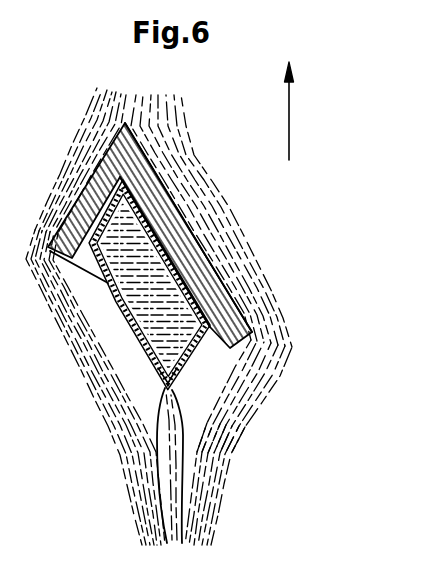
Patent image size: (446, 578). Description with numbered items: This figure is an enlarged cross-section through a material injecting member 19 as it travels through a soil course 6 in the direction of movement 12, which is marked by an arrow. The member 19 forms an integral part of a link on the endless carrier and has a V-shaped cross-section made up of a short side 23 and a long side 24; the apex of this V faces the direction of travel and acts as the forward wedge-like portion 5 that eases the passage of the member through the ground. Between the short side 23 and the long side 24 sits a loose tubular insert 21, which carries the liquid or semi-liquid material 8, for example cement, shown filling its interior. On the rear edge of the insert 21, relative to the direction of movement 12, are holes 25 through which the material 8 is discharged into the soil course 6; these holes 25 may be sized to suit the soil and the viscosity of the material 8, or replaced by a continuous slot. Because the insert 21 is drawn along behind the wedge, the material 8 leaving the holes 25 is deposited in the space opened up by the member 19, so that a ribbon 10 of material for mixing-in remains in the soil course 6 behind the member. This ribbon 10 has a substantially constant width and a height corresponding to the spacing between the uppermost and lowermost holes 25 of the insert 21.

The forward wedge-like portion 5 is at (128, 122).
The soil course 6 is at (223, 460).
The material 8 is at (150, 252).
The ribbon 10 is at (180, 513).
The direction of movement 12 is at (289, 108).
The material injecting member 19 is at (157, 203).
The tubular insert 21 is at (110, 292).
The short side 23 is at (80, 196).
The long side 24 is at (210, 257).
The holes 25 is at (165, 384).